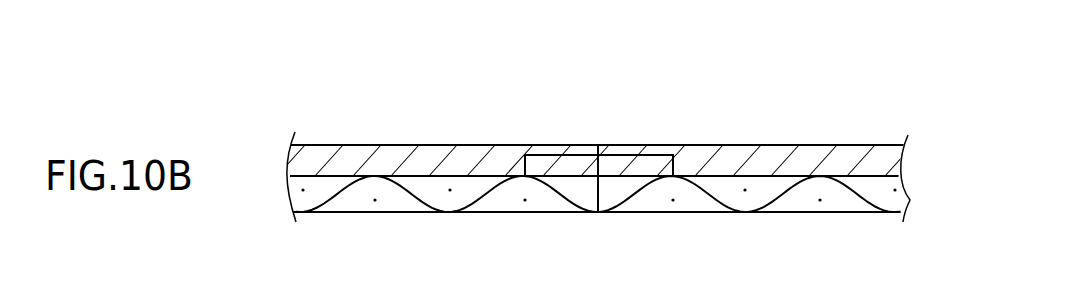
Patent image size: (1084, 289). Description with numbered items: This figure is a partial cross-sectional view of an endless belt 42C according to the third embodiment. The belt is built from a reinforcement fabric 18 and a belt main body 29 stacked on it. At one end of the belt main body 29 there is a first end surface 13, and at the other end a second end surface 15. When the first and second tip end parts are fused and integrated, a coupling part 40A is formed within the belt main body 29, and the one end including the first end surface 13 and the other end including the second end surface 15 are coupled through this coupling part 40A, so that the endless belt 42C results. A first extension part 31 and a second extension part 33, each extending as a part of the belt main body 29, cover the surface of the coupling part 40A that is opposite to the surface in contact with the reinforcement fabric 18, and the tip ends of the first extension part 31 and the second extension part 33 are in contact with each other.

The first end surface 13 is at (536, 152).
The second end surface 15 is at (658, 148).
The reinforcement fabric 18 is at (798, 200).
The belt main body 29 is at (853, 160).
The first extension part 31 is at (578, 147).
The second extension part 33 is at (615, 147).
The coupling part 40A is at (633, 157).
The endless belt 42C is at (773, 106).